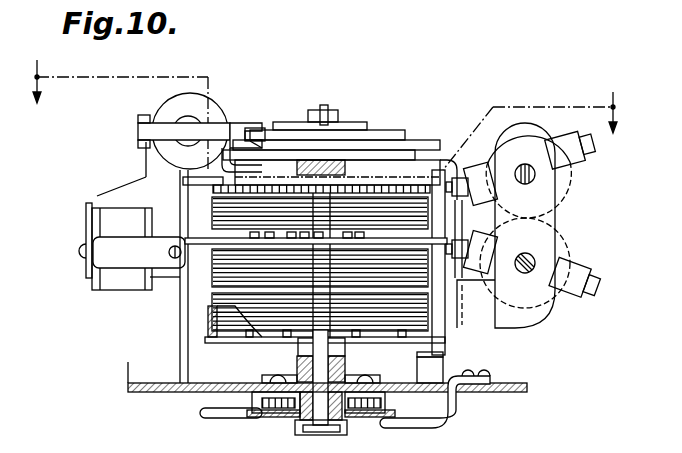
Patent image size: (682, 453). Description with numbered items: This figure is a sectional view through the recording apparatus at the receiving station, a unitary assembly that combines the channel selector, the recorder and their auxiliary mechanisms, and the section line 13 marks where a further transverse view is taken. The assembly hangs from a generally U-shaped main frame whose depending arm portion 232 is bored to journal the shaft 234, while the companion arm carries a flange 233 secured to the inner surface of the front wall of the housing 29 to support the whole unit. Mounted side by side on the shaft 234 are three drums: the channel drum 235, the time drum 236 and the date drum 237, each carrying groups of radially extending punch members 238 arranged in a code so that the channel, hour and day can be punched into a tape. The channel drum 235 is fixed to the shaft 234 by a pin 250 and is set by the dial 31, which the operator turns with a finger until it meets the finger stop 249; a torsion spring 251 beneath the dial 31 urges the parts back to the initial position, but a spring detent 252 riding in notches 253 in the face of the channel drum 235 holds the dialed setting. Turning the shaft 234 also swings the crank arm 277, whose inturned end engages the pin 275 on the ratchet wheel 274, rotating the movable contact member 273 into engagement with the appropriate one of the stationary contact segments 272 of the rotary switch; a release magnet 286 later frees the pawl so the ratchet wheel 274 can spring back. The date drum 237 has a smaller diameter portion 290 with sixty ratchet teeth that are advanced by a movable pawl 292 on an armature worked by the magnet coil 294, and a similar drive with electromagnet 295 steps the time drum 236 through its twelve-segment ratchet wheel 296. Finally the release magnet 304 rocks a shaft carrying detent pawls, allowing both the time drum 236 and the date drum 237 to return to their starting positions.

The section line 13- 13 is at (328, 105).
The housing 29 is at (170, 390).
The dial 31 is at (212, 420).
The arm portion 232 is at (380, 140).
The flange 233 is at (366, 402).
The shaft 234 is at (310, 434).
The channel drum 235 is at (206, 322).
The time drum 236 is at (207, 278).
The date drum 237 is at (186, 208).
The punch members 238 is at (208, 305).
The finger stop 249 is at (460, 416).
The pin 250 is at (300, 345).
The torsion spring 251 is at (278, 408).
The spring detent 252 is at (447, 355).
The notches 253 is at (390, 341).
The contact segments 272 is at (204, 112).
The movable contact member 273 is at (264, 127).
The ratchet wheel 274 is at (343, 247).
The pin 275 is at (330, 105).
The crank arm 277 is at (352, 112).
The release magnet 286 is at (228, 120).
The smaller diameter portion 290 is at (265, 185).
The movable pawl 292 is at (446, 238).
The magnet coil 294 is at (560, 195).
The electromagnet 295 is at (560, 250).
The ratchet wheel 296 is at (372, 192).
The release magnet 304 is at (126, 274).